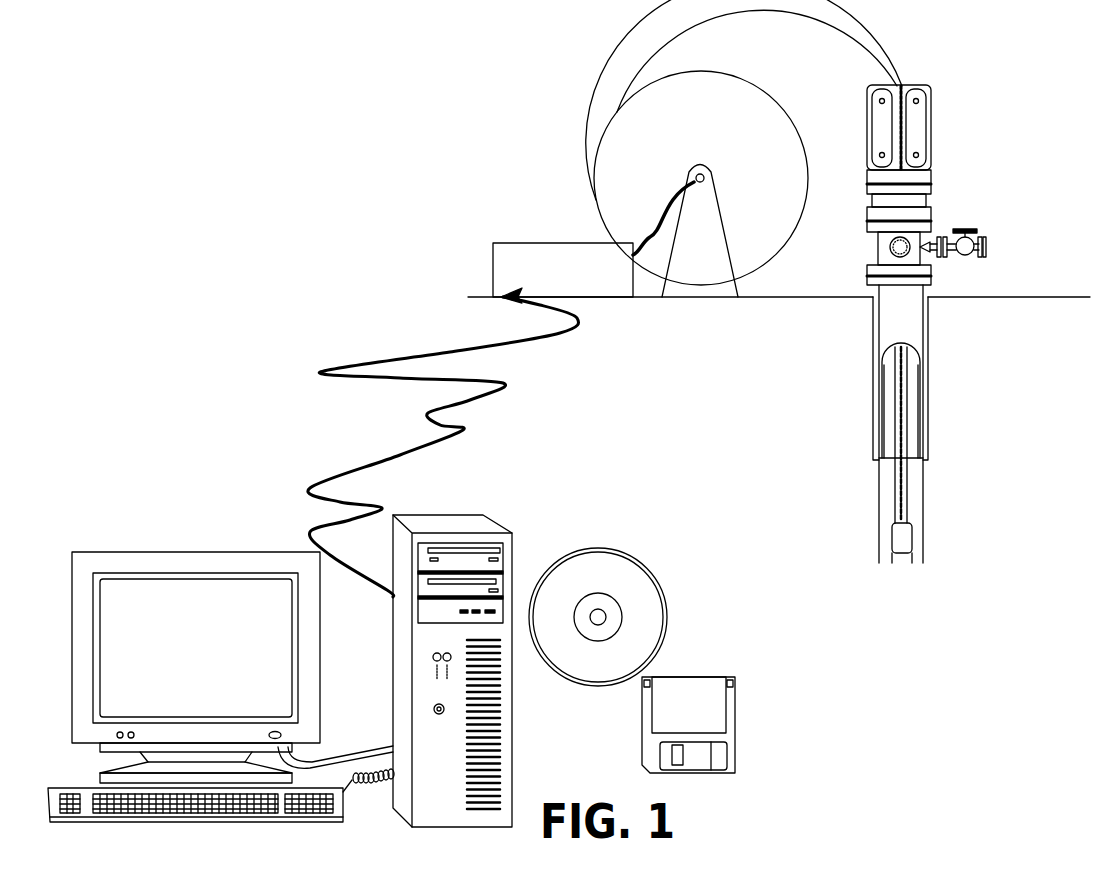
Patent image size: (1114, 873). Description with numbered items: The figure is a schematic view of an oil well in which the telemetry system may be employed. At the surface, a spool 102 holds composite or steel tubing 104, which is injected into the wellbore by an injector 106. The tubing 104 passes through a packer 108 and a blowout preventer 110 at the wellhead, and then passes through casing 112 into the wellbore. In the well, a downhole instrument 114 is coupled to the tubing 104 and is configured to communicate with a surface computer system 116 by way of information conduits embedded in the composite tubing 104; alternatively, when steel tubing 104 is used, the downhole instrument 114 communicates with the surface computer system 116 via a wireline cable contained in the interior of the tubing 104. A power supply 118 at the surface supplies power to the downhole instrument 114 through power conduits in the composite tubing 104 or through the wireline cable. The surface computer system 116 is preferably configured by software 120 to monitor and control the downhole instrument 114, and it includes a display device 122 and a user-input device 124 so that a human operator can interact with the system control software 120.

The spool 102 is at (706, 143).
The tubing 104 is at (638, 48).
The injector 106 is at (929, 113).
The packer 108 is at (928, 198).
The blowout preventer 110 is at (878, 248).
The casing 112 is at (925, 338).
The downhole instrument 114 is at (912, 535).
The surface computer system 116 is at (391, 704).
The power supply 118 is at (537, 243).
The software 120 is at (640, 697).
The display device 122 is at (95, 742).
The user-input device 124 is at (85, 821).